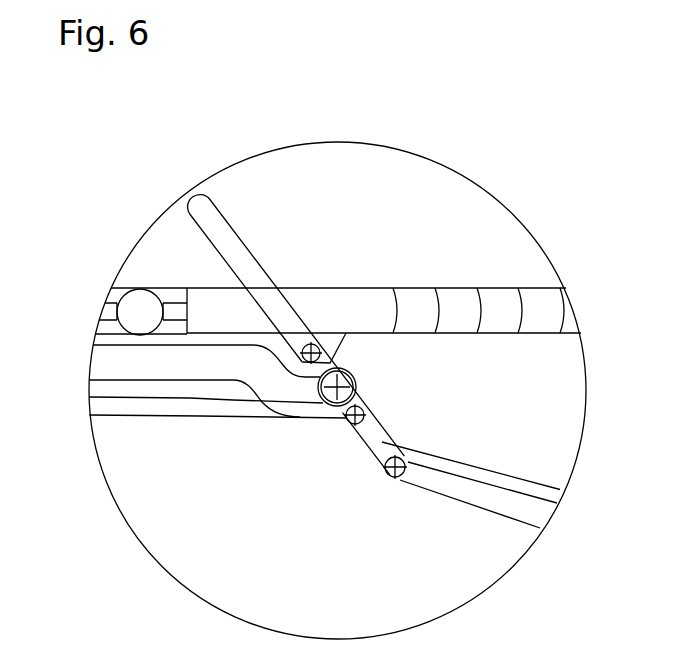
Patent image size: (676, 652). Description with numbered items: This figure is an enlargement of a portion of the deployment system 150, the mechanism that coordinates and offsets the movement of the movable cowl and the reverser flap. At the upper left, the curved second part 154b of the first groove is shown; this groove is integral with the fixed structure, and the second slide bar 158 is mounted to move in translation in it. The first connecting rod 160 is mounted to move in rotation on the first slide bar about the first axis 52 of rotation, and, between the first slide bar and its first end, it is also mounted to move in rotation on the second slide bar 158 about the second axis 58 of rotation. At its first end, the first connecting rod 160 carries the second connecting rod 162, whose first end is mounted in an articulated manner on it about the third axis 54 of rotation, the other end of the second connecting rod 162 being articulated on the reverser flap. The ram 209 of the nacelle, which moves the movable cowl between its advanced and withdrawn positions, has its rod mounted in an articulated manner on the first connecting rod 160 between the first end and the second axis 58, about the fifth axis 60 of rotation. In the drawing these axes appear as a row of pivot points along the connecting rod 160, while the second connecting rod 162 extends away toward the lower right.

The deployment system 150 is at (528, 205).
The curved second part 154b is at (260, 372).
The first axis of rotation 52 is at (320, 344).
The second slide bar 158 is at (355, 378).
The second axis of rotation 58 is at (356, 388).
The fifth axis of rotation 60 is at (350, 424).
The third axis of rotation 54 is at (388, 473).
The first connecting rod 160 is at (560, 489).
The second connecting rod 162 is at (521, 511).
The ram 209 is at (203, 418).